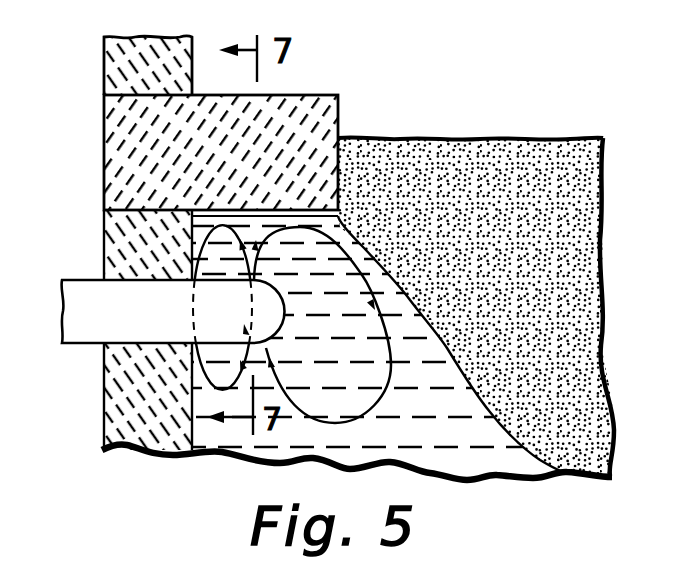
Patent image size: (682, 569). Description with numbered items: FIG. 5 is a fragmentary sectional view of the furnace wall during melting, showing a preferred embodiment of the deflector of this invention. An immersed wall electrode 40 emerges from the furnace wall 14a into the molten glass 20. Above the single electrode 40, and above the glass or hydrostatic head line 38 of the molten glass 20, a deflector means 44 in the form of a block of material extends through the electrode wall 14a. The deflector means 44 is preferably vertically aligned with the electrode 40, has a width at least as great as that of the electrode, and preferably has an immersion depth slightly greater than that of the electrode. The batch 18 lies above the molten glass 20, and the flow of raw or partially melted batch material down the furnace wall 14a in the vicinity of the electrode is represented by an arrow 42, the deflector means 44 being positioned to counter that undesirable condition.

The furnace wall 14a is at (103, 407).
The deflector means 44 is at (338, 96).
The glass or hydrostatic head line 38 is at (192, 213).
The electrode 40 is at (80, 284).
The arrow 42 is at (200, 370).
The batch 18 is at (484, 195).
The molten glass 20 is at (448, 433).